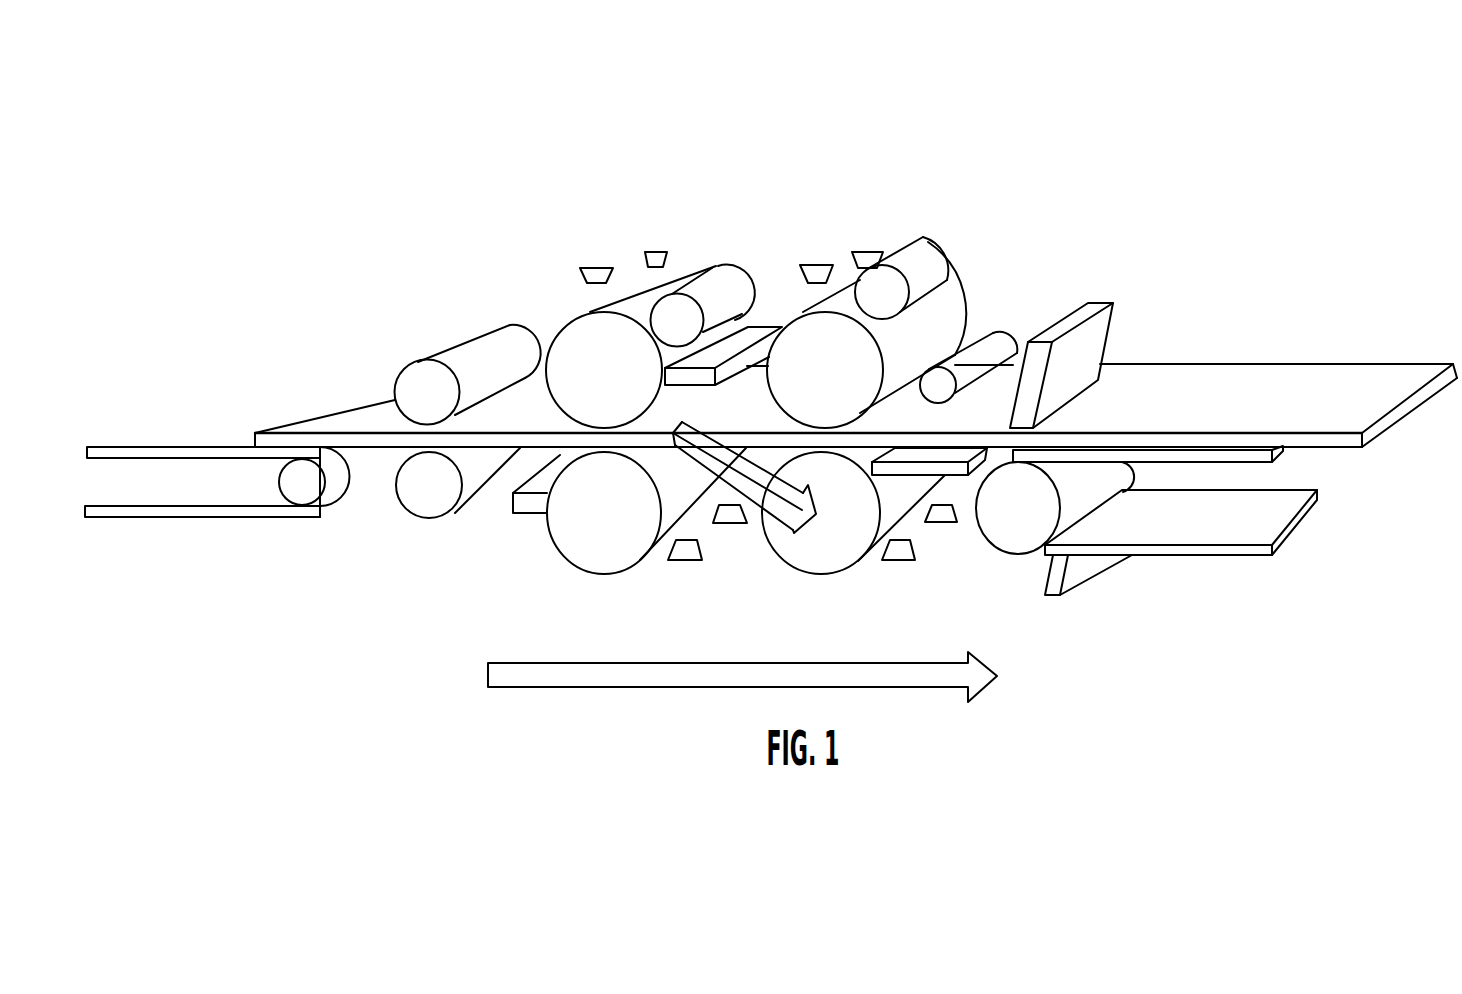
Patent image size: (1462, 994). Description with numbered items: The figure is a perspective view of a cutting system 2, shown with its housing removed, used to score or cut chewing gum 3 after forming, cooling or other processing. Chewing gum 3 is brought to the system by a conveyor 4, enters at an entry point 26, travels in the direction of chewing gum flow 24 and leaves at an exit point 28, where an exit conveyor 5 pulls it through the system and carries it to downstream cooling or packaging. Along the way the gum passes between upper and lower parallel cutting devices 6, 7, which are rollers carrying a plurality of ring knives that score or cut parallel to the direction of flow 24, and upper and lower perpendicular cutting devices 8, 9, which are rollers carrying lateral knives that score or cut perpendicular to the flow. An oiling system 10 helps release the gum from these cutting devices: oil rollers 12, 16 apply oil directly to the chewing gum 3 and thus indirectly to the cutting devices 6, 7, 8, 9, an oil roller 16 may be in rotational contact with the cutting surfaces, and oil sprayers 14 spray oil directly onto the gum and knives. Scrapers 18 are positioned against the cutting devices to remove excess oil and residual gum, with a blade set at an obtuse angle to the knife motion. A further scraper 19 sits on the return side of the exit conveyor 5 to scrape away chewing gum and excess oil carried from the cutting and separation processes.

The cutting system 2 is at (1294, 167).
The chewing gum 3 is at (1165, 362).
The conveyor 4 is at (217, 462).
The exit conveyor 5 is at (1185, 468).
The upper parallel cutting device 6 is at (684, 264).
The lower parallel cutting device 7 is at (580, 573).
The upper perpendicular cutting device 8 is at (960, 287).
The lower perpendicular cutting device 9 is at (828, 583).
The oiling system 10 is at (503, 218).
The oil roller 12 is at (412, 382).
The oil sprayer 14 is at (594, 266).
The oil roller 16 is at (933, 233).
The scraper 18 is at (675, 386).
The scraper 19 is at (1055, 600).
The direction of chewing gum flow 24 is at (570, 694).
The entry point 26 is at (252, 434).
The exit point 28 is at (1345, 453).